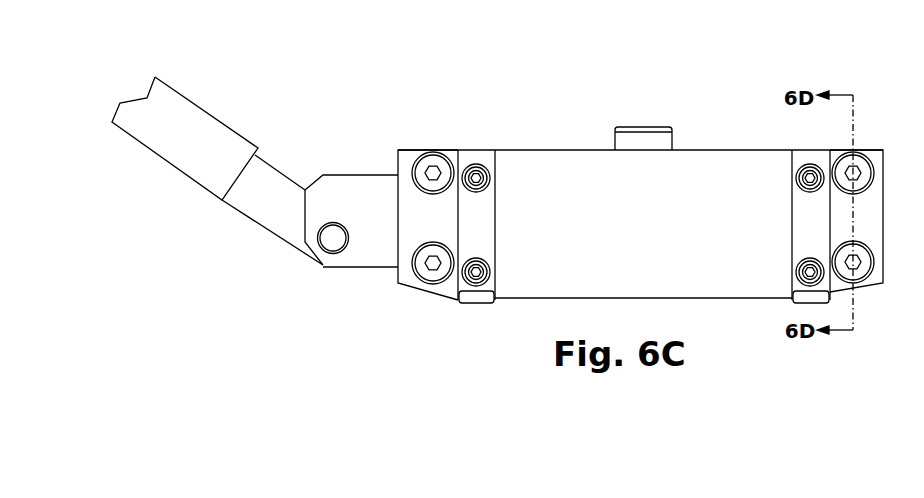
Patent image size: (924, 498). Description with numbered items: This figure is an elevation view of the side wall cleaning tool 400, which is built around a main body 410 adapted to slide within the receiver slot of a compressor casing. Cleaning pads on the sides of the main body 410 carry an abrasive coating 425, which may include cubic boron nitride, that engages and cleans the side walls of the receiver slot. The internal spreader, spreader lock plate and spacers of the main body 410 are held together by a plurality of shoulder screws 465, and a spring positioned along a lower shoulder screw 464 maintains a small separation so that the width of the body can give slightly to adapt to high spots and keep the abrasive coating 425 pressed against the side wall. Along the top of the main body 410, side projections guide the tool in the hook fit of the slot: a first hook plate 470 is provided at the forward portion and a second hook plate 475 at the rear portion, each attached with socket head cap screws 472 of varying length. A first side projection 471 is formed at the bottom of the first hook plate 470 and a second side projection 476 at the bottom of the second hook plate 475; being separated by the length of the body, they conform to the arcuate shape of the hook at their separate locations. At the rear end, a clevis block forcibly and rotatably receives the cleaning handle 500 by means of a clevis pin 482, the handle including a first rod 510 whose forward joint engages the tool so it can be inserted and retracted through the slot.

The side wall cleaning tool 400 is at (635, 201).
The main body 410 is at (640, 198).
The abrasive coating 425 is at (590, 258).
The lower shoulder screw 464 is at (433, 268).
The shoulder screws 465 is at (478, 170).
The hook plate 470 is at (433, 163).
The first side projection 471 is at (812, 298).
The socket head cap screws 472 is at (810, 165).
The second hook plate 475 is at (483, 227).
The second side projection 476 is at (472, 298).
The clevis pin 482 is at (334, 240).
The cleaning handle 500 is at (255, 173).
The first rod 510 is at (160, 160).